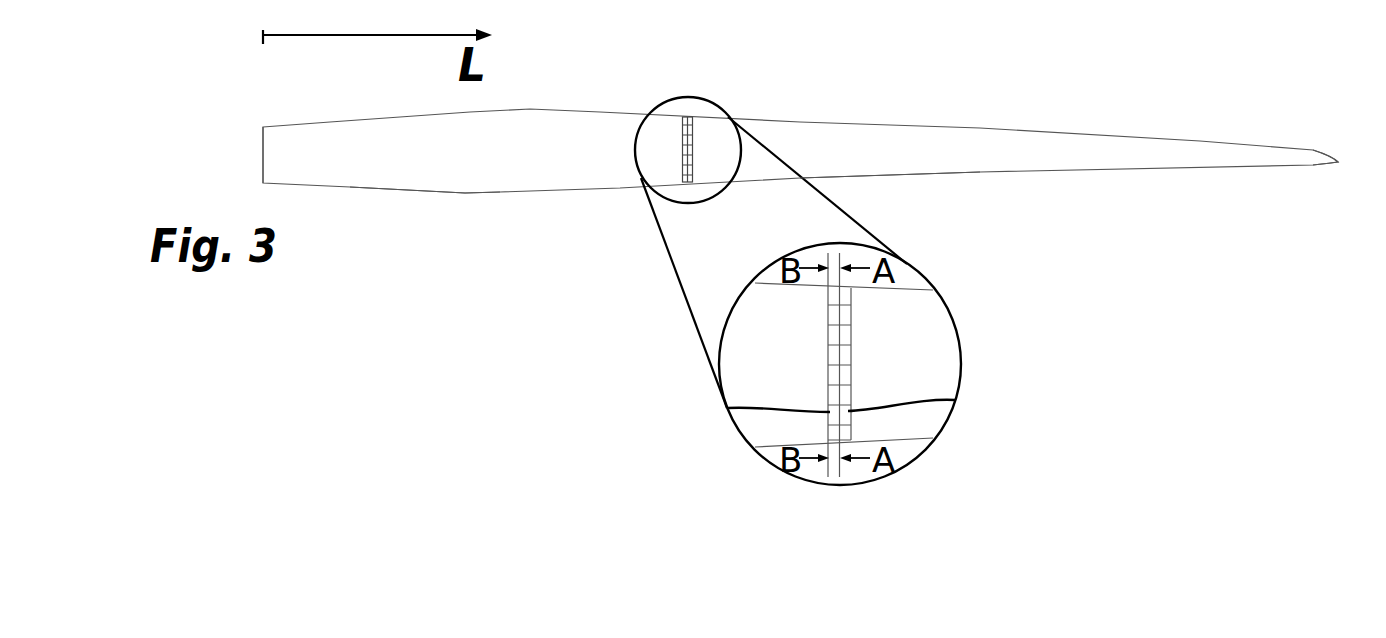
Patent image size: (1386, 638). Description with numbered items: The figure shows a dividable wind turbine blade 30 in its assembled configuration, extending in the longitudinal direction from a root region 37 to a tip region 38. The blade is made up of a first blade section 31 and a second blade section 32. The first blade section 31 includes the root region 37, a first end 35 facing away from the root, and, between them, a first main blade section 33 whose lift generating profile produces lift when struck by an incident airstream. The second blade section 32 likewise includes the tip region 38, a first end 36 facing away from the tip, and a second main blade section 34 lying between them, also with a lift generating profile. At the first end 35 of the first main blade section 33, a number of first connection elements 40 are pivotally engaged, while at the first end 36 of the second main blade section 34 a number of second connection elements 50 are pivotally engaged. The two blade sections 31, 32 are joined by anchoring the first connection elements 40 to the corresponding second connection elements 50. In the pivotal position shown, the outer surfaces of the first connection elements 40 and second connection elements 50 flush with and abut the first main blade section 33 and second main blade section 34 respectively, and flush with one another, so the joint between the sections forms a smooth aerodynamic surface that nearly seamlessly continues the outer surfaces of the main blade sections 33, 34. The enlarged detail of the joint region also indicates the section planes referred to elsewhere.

The dividable wind turbine blade 30 is at (1125, 311).
The first blade section 31 is at (465, 193).
The second blade section 32 is at (892, 176).
The first main blade section 33 is at (533, 153).
The second main blade section 34 is at (1020, 148).
The first end of the first blade section 35 is at (685, 145).
The first end of the second blade section 36 is at (692, 153).
The root region 37 is at (278, 153).
The tip region 38 is at (1305, 157).
The first connection elements 40 is at (727, 408).
The second connection elements 50 is at (955, 400).